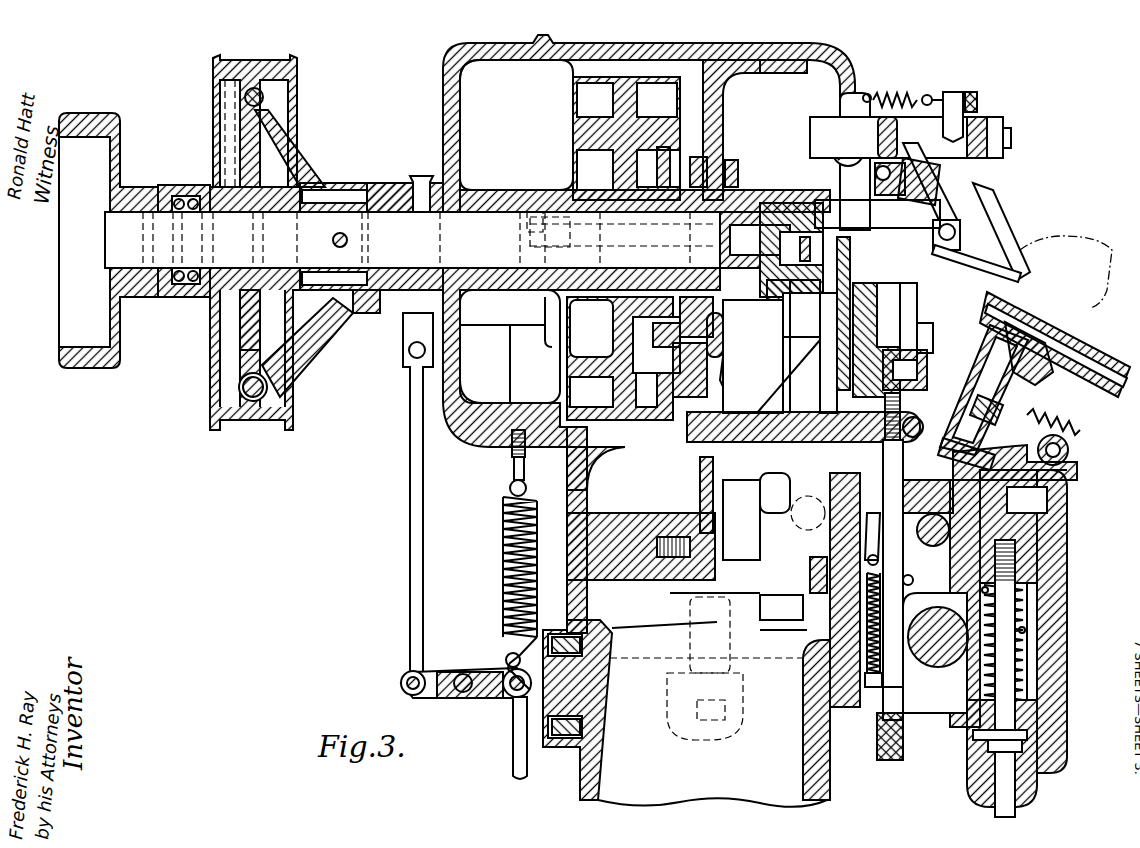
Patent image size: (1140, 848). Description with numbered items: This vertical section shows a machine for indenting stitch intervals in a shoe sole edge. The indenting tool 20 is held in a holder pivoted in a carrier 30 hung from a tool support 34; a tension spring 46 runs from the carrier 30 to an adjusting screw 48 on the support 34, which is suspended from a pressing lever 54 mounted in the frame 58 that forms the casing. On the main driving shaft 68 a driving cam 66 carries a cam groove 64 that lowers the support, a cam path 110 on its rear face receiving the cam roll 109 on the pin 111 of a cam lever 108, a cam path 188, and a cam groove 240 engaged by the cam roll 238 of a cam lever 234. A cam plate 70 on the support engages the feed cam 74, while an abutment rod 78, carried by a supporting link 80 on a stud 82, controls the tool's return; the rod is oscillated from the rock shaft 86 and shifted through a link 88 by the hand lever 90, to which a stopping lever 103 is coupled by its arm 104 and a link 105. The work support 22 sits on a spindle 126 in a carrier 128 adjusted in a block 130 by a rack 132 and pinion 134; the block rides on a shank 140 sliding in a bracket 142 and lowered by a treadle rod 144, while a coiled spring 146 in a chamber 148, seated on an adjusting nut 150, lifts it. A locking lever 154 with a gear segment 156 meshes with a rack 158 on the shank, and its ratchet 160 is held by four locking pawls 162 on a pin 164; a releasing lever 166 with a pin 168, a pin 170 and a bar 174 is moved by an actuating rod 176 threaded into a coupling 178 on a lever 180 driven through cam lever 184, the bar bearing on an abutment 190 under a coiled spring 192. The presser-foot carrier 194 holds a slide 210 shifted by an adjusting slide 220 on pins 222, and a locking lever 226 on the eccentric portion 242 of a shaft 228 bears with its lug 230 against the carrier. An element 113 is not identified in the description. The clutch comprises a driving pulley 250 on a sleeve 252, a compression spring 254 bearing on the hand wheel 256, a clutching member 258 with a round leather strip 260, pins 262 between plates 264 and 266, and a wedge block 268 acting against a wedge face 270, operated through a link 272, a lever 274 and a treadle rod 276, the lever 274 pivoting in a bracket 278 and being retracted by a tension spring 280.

The indenting tool 20 is at (1023, 264).
The work support 22 is at (1092, 340).
The carrier 30 is at (845, 180).
The tool support 34 is at (963, 174).
The tension spring 46 is at (902, 97).
The adjusting screw 48 is at (978, 102).
The pressing lever 54 is at (990, 130).
The frame 58 is at (848, 64).
The cam groove 64 is at (665, 98).
The driving cam 66 is at (580, 80).
The main driving shaft 68 is at (120, 245).
The cam plate 70 is at (868, 192).
The feed cam 74 is at (793, 210).
The abutment rod 78 is at (793, 320).
The supporting link 80 is at (700, 474).
The stud 82 is at (645, 580).
The rock shaft 86 is at (562, 363).
The link 88 is at (768, 350).
The hand lever 90 is at (700, 494).
The stopping lever 103 is at (783, 73).
The arm 104 is at (710, 158).
The link 105 is at (732, 162).
The cam lever 108 is at (553, 312).
The cam roll 109 is at (600, 247).
The cam path 110 is at (580, 104).
The pin 111 is at (527, 223).
The pivot 113 is at (968, 200).
The spindle 126 is at (1040, 390).
The carrier 128 is at (985, 385).
The block 130 is at (1062, 473).
The rack 132 is at (1080, 426).
The pinion 134 is at (1068, 448).
The shank 140 is at (1027, 540).
The bracket 142 is at (1050, 553).
The treadle rod 144 is at (1017, 810).
The coiled spring 146 is at (1027, 599).
The chamber 148 is at (1023, 630).
The adjusting nut 150 is at (1037, 770).
The locking lever 154 is at (925, 665).
The gear segment 156 is at (953, 712).
The rack 158 is at (968, 738).
The ratchet 160 is at (988, 590).
The locking pawls 162 is at (880, 672).
The pin 164 is at (927, 533).
The releasing lever 166 is at (912, 560).
The pin 168 is at (913, 580).
The pin 170 is at (833, 597).
The bar 174 is at (870, 535).
The actuating rod 176 is at (890, 762).
The coupling 178 is at (903, 405).
The lever 180 is at (927, 383).
The cam lever 184 is at (722, 367).
The cam path 188 is at (665, 150).
The abutment 190 is at (827, 553).
The coiled spring 192 is at (866, 663).
The presser-foot carrier 194 is at (915, 297).
The slide 210 is at (900, 322).
The adjusting slide 220 is at (803, 594).
The pins 222 is at (790, 528).
The locking lever 226 is at (707, 446).
The shaft 228 is at (900, 448).
The lug 230 is at (930, 355).
The cam lever 234 is at (685, 380).
The cam roll 238 is at (633, 325).
The cam groove 240 is at (667, 190).
The eccentric portion 242 is at (922, 425).
The driving pulley 250 is at (235, 420).
The sleeve 252 is at (207, 300).
The compression spring 254 is at (197, 197).
The hand wheel 256 is at (92, 368).
The clutching member 258 is at (300, 345).
The round leather strip 260 is at (267, 388).
The pins 262 is at (340, 190).
The plate 264 is at (300, 183).
The plate 266 is at (375, 185).
The wedge block 268 is at (367, 313).
The wedge face 270 is at (420, 178).
The link 272 is at (410, 462).
The lever 274 is at (457, 700).
The treadle rod 276 is at (513, 745).
The bracket 278 is at (503, 663).
The tension spring 280 is at (503, 565).